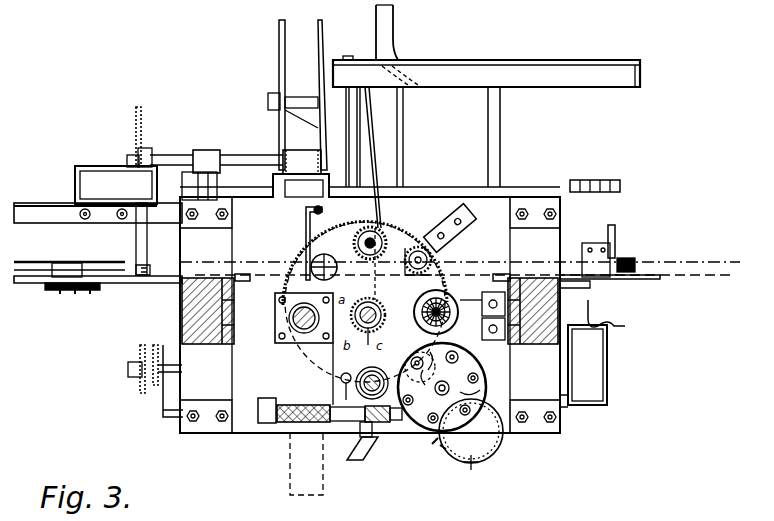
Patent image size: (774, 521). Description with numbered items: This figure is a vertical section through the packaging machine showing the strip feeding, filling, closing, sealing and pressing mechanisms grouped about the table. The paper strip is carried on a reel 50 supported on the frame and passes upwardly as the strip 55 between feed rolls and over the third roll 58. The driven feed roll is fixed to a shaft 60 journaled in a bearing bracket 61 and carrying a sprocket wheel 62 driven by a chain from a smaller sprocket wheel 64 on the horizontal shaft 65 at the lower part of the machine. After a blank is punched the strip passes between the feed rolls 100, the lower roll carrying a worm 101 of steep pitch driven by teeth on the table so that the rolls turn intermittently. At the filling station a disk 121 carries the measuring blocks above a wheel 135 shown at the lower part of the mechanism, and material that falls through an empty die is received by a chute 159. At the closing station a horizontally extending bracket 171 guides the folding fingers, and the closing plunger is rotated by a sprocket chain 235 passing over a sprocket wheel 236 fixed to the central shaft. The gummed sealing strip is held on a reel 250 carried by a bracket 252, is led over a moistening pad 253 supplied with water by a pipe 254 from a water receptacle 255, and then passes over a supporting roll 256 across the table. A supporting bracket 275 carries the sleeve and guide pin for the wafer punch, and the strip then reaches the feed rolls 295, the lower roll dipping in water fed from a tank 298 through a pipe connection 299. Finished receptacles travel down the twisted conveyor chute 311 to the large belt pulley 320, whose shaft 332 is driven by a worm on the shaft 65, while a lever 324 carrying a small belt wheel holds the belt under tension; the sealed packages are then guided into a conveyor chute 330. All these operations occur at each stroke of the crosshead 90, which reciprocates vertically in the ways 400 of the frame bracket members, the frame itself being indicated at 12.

The frame 12 is at (250, 433).
The reel 50 is at (278, 48).
The strip 55 is at (290, 211).
The third roll 58 is at (302, 162).
The shaft 60 is at (235, 160).
The bearing bracket 61 is at (202, 181).
The sprocket wheel 62 is at (141, 133).
The sprocket wheel 64 is at (142, 393).
The horizontal shaft 65 is at (128, 373).
The crosshead 90 is at (224, 318).
The feed rolls 100 is at (287, 426).
The worm 101 is at (380, 426).
The disk 121 is at (488, 380).
The wheel 135 is at (471, 466).
The chute 159 is at (365, 462).
The horizontally extending bracket 171 is at (484, 351).
The sprocket chain 235 is at (416, 302).
The sprocket wheel 236 is at (322, 345).
The reel 250 is at (72, 262).
The bracket 252 is at (132, 281).
The moistening pad 253 is at (146, 264).
The pipe 254 is at (142, 237).
The water receptacle 255 is at (116, 185).
The supporting roll 256 is at (290, 268).
The supporting bracket 275 is at (440, 240).
The feed rolls 295 is at (637, 267).
The tank 298 is at (603, 380).
The pipe connection 299 is at (623, 318).
The conveyor chute 311 is at (381, 205).
The belt pulley 320 is at (482, 61).
The lever 324 is at (560, 187).
The conveyor chute 330 is at (395, 27).
The shaft 332 is at (506, 159).
The ways 400 is at (196, 322).